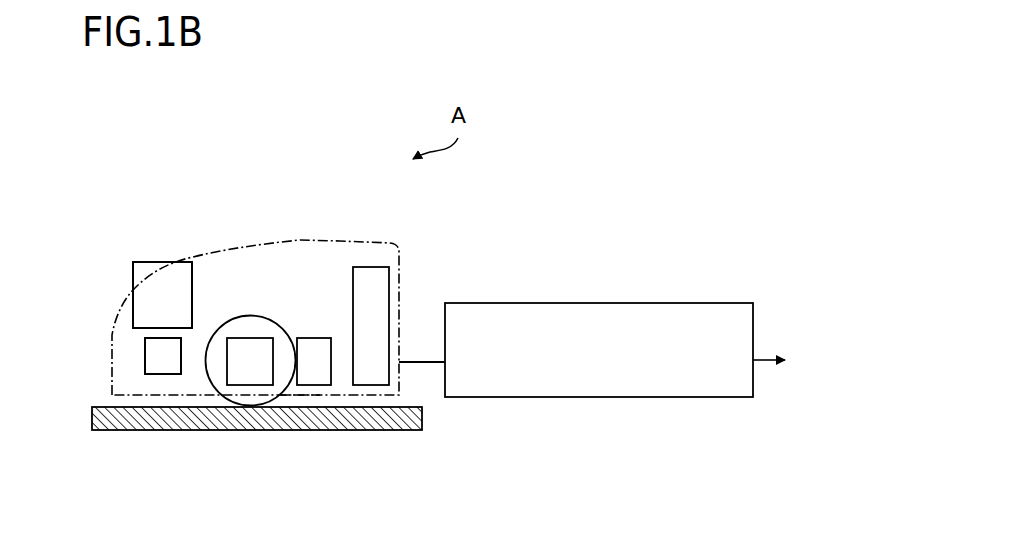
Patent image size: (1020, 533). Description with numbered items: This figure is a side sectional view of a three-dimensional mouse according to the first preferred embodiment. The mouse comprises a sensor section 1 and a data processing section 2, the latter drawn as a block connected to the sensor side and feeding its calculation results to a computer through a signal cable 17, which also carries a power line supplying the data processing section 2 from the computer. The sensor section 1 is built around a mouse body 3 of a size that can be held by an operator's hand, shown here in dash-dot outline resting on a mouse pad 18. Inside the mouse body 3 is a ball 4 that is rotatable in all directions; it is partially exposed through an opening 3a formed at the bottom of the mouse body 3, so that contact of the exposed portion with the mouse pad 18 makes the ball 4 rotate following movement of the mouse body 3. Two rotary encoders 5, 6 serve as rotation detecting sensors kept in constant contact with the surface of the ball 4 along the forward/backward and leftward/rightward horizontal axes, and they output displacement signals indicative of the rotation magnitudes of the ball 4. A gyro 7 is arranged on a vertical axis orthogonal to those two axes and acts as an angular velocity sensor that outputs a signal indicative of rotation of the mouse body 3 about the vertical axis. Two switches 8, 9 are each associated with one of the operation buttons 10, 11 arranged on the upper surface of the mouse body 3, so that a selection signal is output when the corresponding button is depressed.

The sensor section 1 is at (266, 306).
The data processing section 2 is at (603, 315).
The mouse body 3 is at (306, 240).
The opening 3a is at (300, 395).
The ball 4 is at (260, 393).
The rotary encoder 5 is at (308, 372).
The rotary encoder 6 is at (250, 372).
The gyro 7 is at (375, 292).
The switch 8 is at (160, 359).
The switch 9 is at (163, 356).
The operation button 10 is at (168, 280).
The operation button 11 is at (162, 295).
The signal cable 17 is at (763, 360).
The mouse pad 18 is at (418, 412).